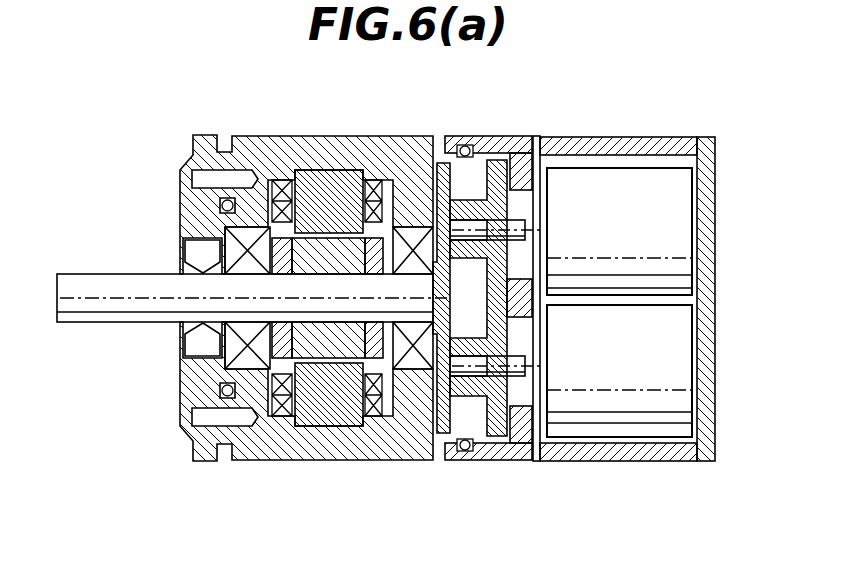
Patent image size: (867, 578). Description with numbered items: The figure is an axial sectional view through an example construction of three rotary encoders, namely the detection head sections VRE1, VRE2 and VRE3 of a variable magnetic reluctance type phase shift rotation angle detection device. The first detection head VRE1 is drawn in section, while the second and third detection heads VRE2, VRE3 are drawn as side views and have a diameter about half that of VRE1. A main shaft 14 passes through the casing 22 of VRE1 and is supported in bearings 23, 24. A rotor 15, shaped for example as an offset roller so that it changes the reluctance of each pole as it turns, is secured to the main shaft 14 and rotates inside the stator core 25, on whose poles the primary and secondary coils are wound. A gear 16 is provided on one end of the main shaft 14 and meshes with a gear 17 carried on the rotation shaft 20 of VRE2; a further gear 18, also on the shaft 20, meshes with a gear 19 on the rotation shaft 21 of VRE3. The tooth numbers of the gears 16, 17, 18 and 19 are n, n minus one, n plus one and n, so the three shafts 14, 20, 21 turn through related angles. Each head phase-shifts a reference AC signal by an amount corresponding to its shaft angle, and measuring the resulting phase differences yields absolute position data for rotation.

The main shaft 14 is at (131, 280).
The rotor 15 is at (216, 337).
The gear 16 is at (432, 283).
The gear 17 is at (463, 210).
The gear 18 is at (514, 160).
The gear 19 is at (490, 463).
The rotation shaft 20 is at (513, 227).
The rotation shaft 21 is at (513, 361).
The casing 22 is at (314, 142).
The bearing 23 is at (248, 237).
The bearing 24 is at (414, 233).
The stator core 25 is at (348, 178).
The detection head section VRE1 is at (354, 464).
The detection head section VRE2 is at (675, 202).
The detection head section VRE3 is at (678, 358).